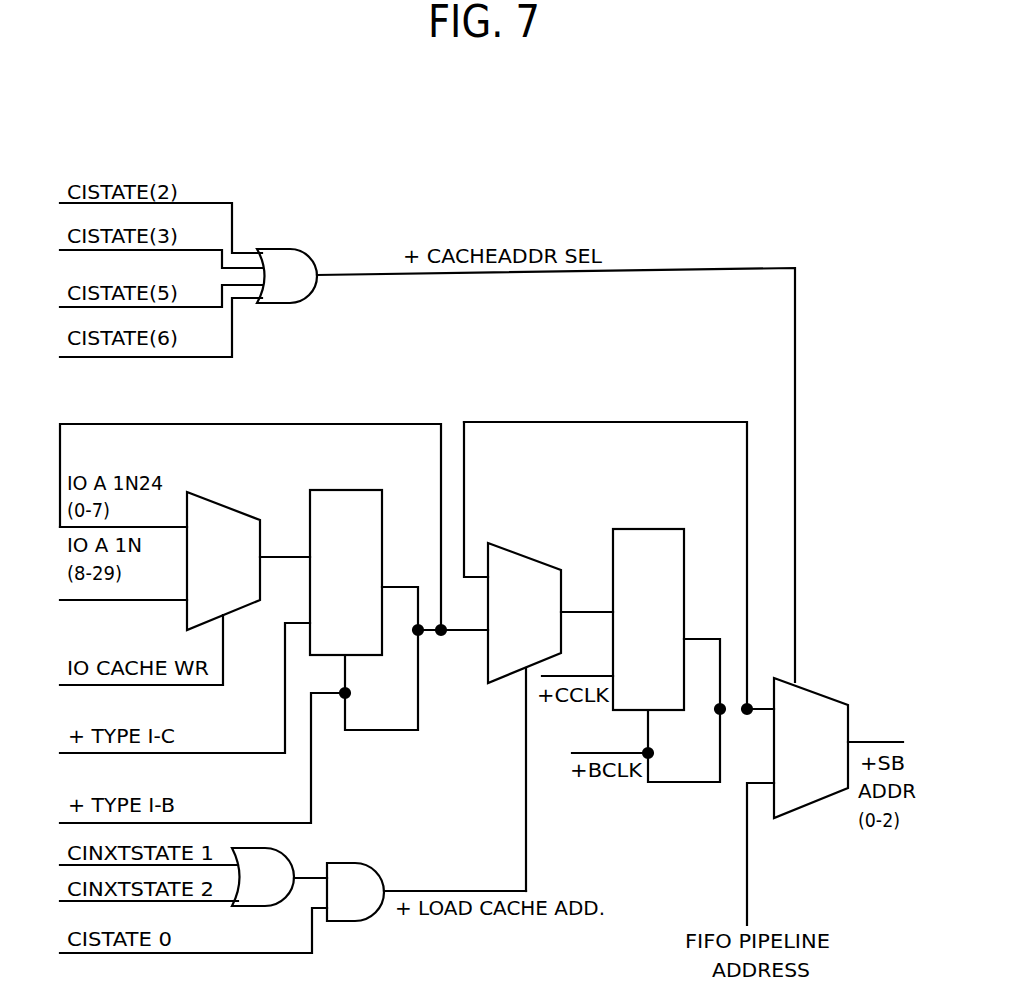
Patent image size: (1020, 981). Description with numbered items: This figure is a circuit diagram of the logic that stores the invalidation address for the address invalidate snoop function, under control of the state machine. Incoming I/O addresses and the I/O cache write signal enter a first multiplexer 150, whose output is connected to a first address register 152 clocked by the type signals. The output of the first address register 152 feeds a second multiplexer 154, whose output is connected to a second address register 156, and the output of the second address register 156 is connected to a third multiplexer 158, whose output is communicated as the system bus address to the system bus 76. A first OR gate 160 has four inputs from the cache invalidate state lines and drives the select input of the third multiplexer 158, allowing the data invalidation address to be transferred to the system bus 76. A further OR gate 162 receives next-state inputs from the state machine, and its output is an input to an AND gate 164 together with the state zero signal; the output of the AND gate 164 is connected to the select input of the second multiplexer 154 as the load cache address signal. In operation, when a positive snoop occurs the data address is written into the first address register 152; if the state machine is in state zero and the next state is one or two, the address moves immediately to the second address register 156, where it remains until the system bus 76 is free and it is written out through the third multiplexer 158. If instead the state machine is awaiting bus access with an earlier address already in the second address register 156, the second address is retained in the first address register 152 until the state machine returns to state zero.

The first OR gate 160 is at (283, 248).
The first multiplexer 150 is at (220, 504).
The first address register 152 is at (382, 490).
The second multiplexer 154 is at (525, 557).
The second address register 156 is at (670, 529).
The third multiplexer 158 is at (810, 691).
The system bus 76 is at (870, 742).
The OR gate 162 is at (283, 863).
The AND gate 164 is at (355, 865).